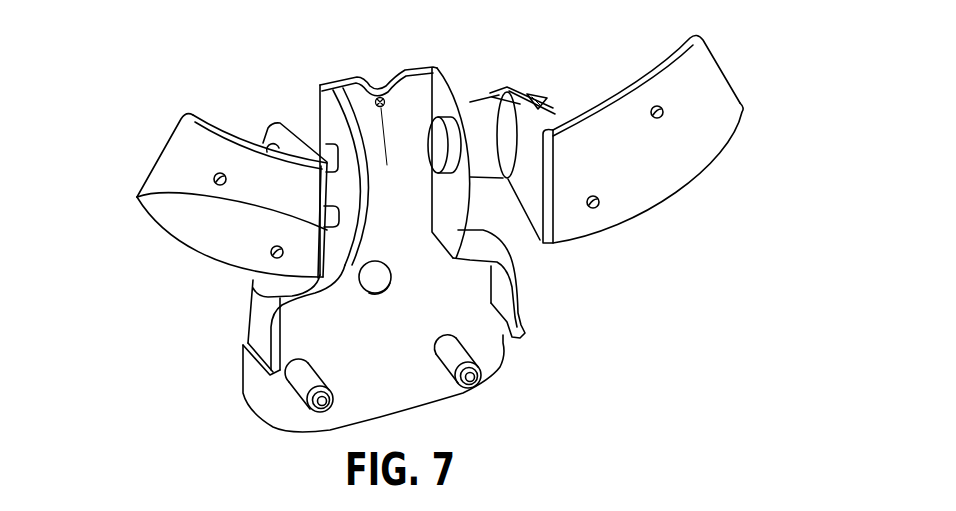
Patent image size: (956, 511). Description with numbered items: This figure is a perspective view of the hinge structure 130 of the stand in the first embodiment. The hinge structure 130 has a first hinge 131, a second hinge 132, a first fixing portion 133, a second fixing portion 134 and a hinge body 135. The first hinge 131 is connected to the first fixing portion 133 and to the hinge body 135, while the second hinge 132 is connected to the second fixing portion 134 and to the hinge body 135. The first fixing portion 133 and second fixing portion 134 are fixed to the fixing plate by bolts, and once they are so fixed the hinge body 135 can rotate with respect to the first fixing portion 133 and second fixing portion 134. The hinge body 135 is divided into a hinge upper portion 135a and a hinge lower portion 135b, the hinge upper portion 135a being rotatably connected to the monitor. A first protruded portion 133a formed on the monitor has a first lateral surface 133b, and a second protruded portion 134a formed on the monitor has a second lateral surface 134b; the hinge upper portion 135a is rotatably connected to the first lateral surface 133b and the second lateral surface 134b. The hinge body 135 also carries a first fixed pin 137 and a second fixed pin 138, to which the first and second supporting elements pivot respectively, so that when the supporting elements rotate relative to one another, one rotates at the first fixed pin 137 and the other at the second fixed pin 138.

The hinge structure 130 is at (322, 81).
The first hinge 131 is at (482, 113).
The second hinge 132 is at (320, 142).
The first fixing portion 133 is at (660, 180).
The first protruded portion 133a is at (529, 95).
The first lateral surface 133b is at (533, 180).
The second fixing portion 134 is at (168, 218).
The second protruded portion 134a is at (300, 138).
The second lateral surface 134b is at (137, 197).
The hinge body 135 is at (432, 66).
The hinge upper portion 135a is at (377, 97).
The hinge lower portion 135b is at (408, 385).
The first fixed pin 137 is at (455, 343).
The second fixed pin 138 is at (297, 378).